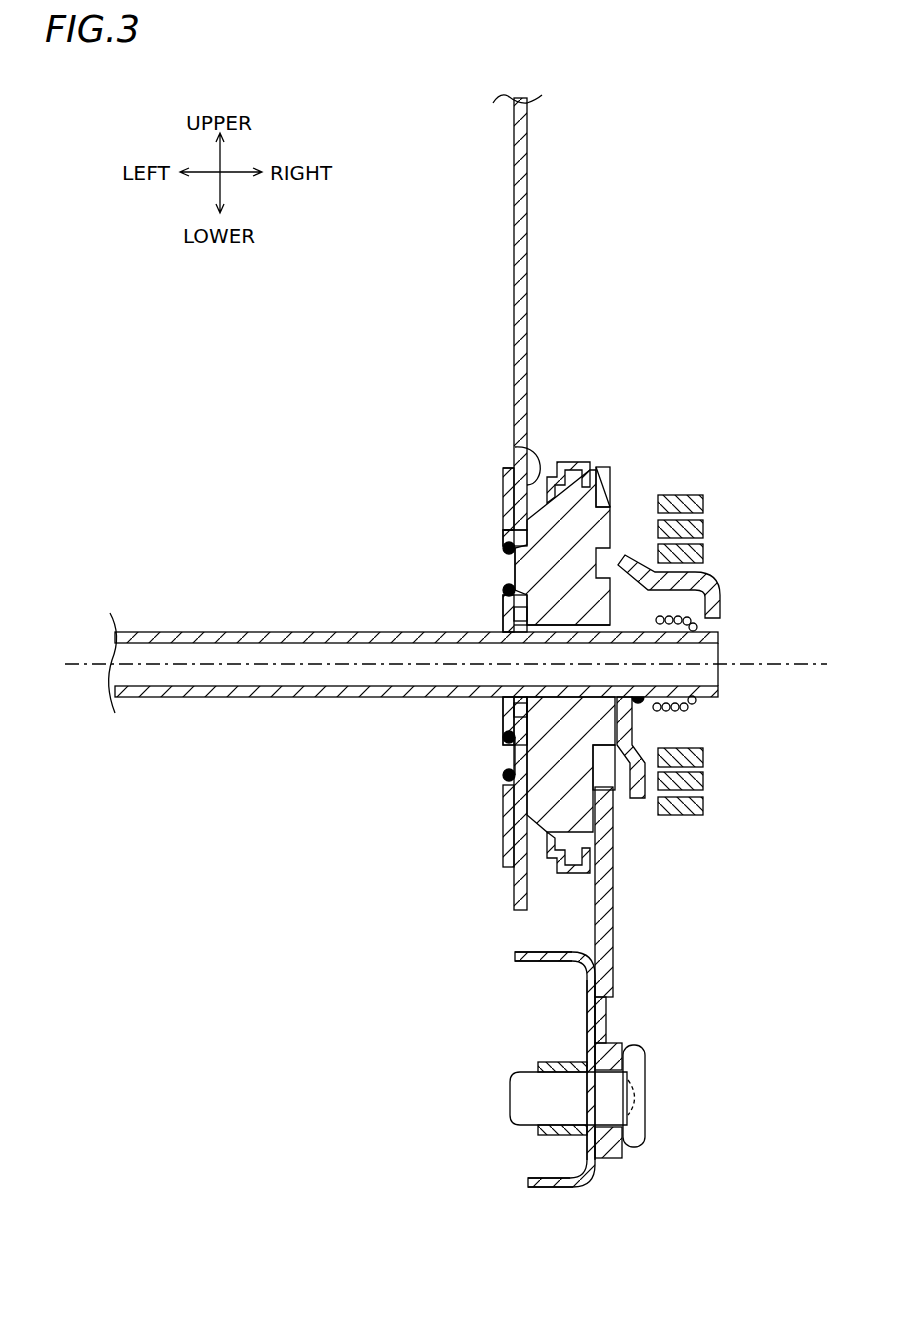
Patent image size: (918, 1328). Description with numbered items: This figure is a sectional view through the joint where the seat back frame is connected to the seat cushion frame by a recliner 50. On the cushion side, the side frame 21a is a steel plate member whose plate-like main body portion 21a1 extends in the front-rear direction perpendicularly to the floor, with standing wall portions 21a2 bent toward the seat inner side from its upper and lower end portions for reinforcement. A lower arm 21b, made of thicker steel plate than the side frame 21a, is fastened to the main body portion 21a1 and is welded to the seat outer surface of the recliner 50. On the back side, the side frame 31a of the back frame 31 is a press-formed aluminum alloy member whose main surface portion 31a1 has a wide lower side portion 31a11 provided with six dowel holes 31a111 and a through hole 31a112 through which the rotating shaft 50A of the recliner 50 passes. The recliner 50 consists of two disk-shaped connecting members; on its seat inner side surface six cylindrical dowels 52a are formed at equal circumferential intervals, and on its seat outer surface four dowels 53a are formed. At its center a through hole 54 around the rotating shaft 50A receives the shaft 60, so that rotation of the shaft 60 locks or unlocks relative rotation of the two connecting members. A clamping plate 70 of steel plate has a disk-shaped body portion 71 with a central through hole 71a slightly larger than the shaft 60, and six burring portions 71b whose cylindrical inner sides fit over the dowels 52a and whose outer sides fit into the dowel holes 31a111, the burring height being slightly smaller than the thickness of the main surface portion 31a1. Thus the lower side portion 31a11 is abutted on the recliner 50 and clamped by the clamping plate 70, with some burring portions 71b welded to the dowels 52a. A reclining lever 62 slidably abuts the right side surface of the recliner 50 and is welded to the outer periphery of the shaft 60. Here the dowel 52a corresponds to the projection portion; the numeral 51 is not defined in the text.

The side frame 21a is at (530, 1077).
The main body portion 21a1 is at (587, 982).
The standing wall portion 21a2 is at (555, 950).
The lower arm 21b is at (613, 915).
The back frame 31 is at (609, 502).
The side frame 31a is at (609, 502).
The main surface portion 31a1 is at (527, 210).
The lower side portion 31a11 is at (527, 440).
The dowel hole 31a111 is at (508, 541).
The through hole 31a112 is at (517, 633).
The recliner 50 is at (537, 626).
The rotating shaft 50A is at (790, 660).
The motor housing 51 is at (549, 473).
The dowel 52a is at (513, 572).
The dowel 53a is at (612, 538).
The through hole 54 is at (557, 633).
The shaft 60 is at (207, 632).
The reclining lever 62 is at (633, 733).
The clamping plate 70 is at (503, 488).
The body portion 71 is at (503, 515).
The through hole 71a is at (503, 632).
The burring portion 71b is at (505, 548).